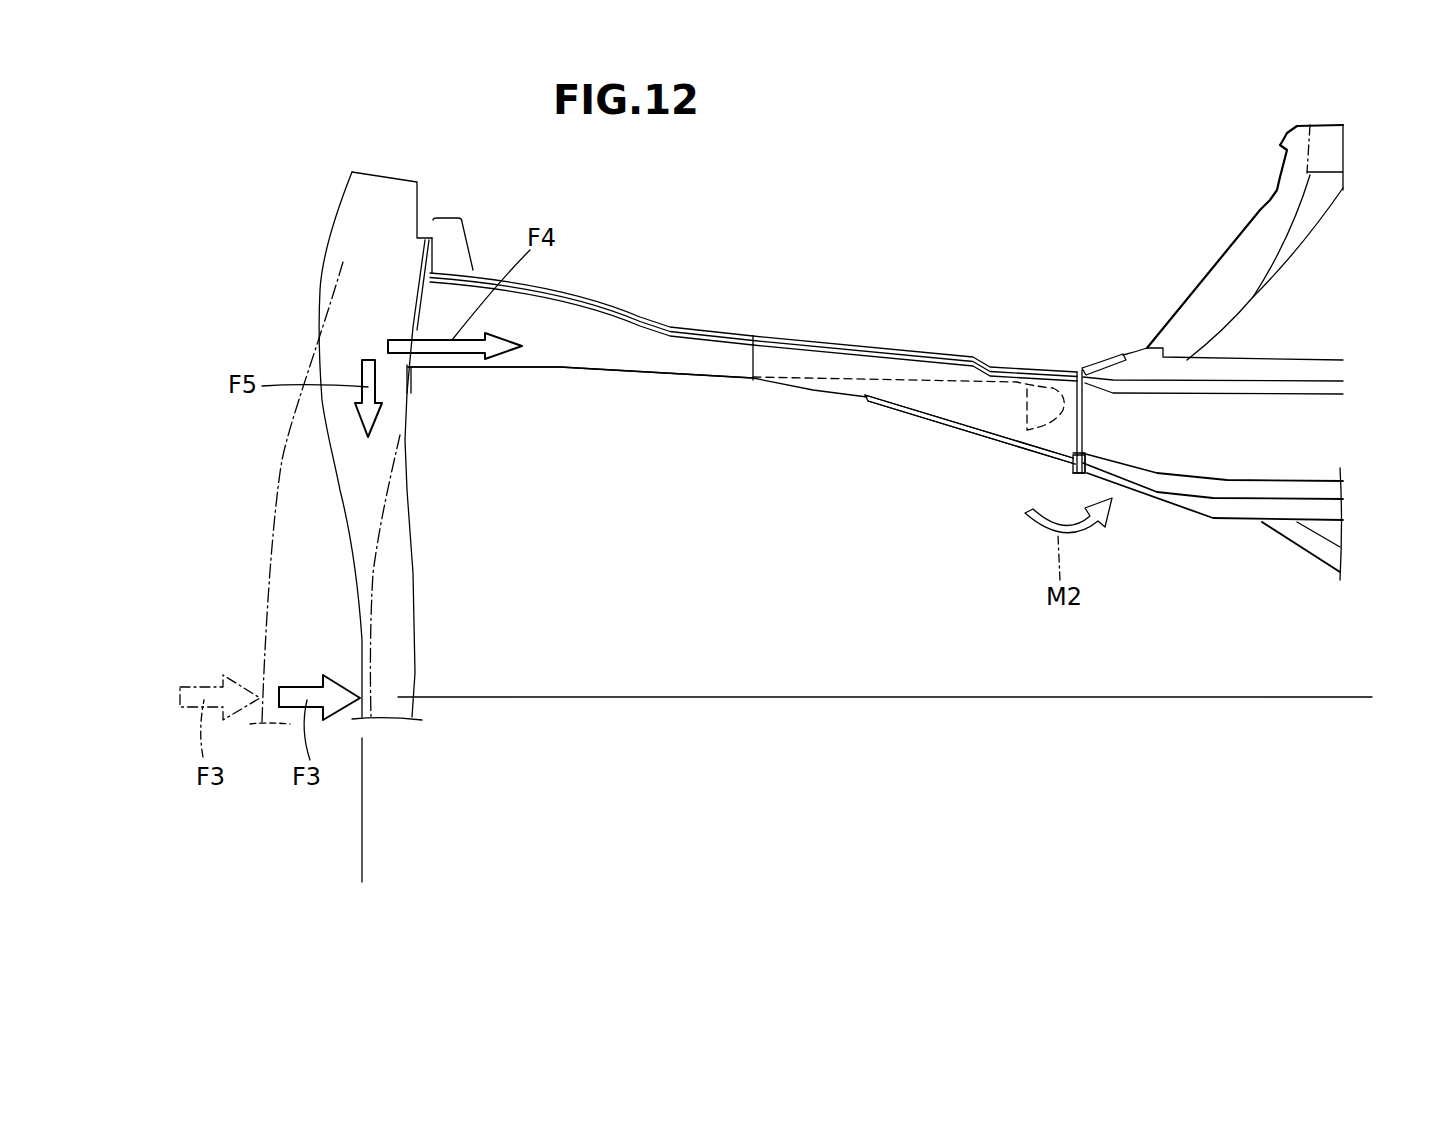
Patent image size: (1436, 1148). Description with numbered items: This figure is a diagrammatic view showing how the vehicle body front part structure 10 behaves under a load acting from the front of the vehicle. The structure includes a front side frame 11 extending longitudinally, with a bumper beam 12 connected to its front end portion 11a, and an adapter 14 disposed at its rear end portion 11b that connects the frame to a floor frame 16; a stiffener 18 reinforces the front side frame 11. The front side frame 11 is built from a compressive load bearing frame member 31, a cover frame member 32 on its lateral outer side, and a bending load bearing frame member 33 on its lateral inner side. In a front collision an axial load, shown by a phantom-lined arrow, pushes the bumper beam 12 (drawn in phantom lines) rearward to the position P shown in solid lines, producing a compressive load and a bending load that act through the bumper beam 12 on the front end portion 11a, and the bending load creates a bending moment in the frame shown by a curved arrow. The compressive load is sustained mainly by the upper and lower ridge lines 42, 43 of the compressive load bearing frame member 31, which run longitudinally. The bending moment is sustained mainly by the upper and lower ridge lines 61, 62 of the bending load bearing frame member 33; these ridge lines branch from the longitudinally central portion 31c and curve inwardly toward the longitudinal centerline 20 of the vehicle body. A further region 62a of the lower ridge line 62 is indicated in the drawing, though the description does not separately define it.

The vehicle body front part structure 10 is at (1022, 178).
The front side frame 11 is at (759, 302).
The front end portion of front side frame 11a is at (443, 290).
The rear end portion of front side frame 11b is at (1065, 365).
The bumper beam 12 is at (357, 573).
The adapter 14 is at (1112, 352).
The floor frame 16 is at (1260, 370).
The stiffener 18 is at (973, 433).
The longitudinal centerline of the vehicle body 20 is at (498, 697).
The compressive load bearing frame member 31 is at (610, 340).
The longitudinally central portion of compressive load bearing frame member 31c is at (733, 367).
The cover frame member 32 is at (707, 323).
The bending load bearing frame member 33 is at (903, 390).
The upper ridge line 42 is at (583, 368).
The lower ridge line 43 is at (580, 372).
The upper ridge line 61 is at (813, 390).
The lower ridge line 62 is at (969, 426).
The flange of reinforcing member 62a is at (937, 417).